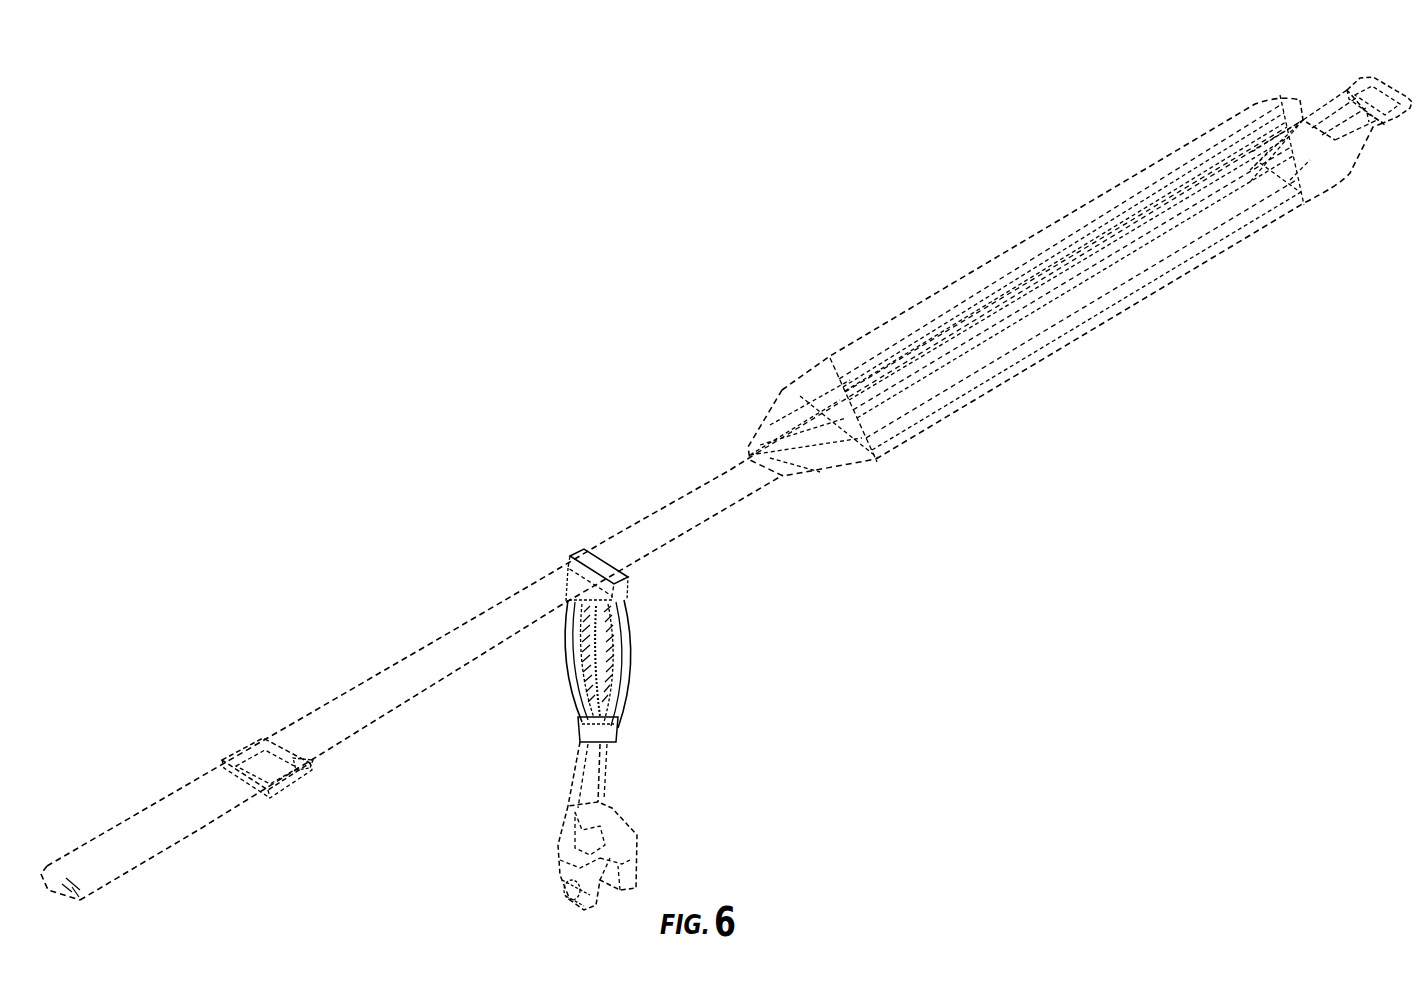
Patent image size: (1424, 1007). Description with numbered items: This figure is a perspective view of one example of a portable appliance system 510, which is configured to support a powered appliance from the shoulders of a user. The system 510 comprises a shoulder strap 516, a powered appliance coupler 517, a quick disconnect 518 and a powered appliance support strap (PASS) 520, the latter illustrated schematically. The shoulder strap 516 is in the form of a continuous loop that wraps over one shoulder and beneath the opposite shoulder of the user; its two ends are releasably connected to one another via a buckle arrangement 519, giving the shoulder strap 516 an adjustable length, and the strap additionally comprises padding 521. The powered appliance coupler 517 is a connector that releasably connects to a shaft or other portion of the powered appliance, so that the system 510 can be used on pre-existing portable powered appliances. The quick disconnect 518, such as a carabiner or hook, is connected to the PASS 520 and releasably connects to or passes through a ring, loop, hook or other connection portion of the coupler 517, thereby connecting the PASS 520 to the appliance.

The portable appliance system 510 is at (437, 380).
The shoulder strap 516 is at (694, 470).
The powered appliance coupler 517 is at (626, 834).
The quick disconnect 518 is at (572, 760).
The buckle arrangement 519 is at (1390, 82).
The powered appliance support strap (PASS) 520 is at (646, 657).
The padding 521 is at (979, 262).